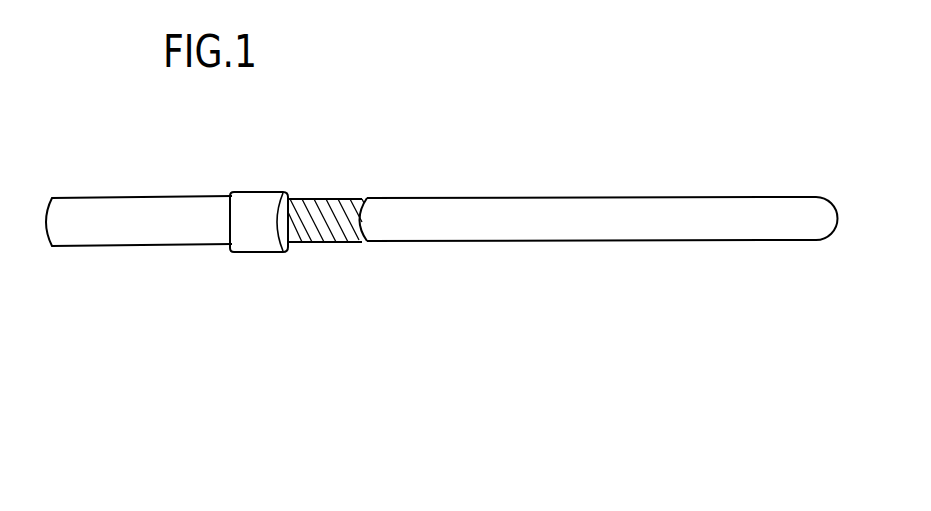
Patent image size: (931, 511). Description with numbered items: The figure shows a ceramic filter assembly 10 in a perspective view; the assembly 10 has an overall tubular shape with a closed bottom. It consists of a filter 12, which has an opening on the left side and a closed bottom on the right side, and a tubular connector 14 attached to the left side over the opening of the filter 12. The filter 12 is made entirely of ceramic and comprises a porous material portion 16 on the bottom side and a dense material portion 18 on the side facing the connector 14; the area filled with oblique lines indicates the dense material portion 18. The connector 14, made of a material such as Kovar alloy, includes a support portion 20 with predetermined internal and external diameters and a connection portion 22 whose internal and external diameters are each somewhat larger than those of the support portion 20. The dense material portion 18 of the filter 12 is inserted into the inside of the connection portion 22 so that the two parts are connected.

The ceramic filter assembly 10 is at (456, 122).
The filter 12 is at (488, 179).
The tubular connector 14 is at (176, 189).
The porous material portion 16 is at (545, 232).
The dense material portion 18 is at (317, 232).
The support portion 20 is at (127, 235).
The connection portion 22 is at (253, 243).